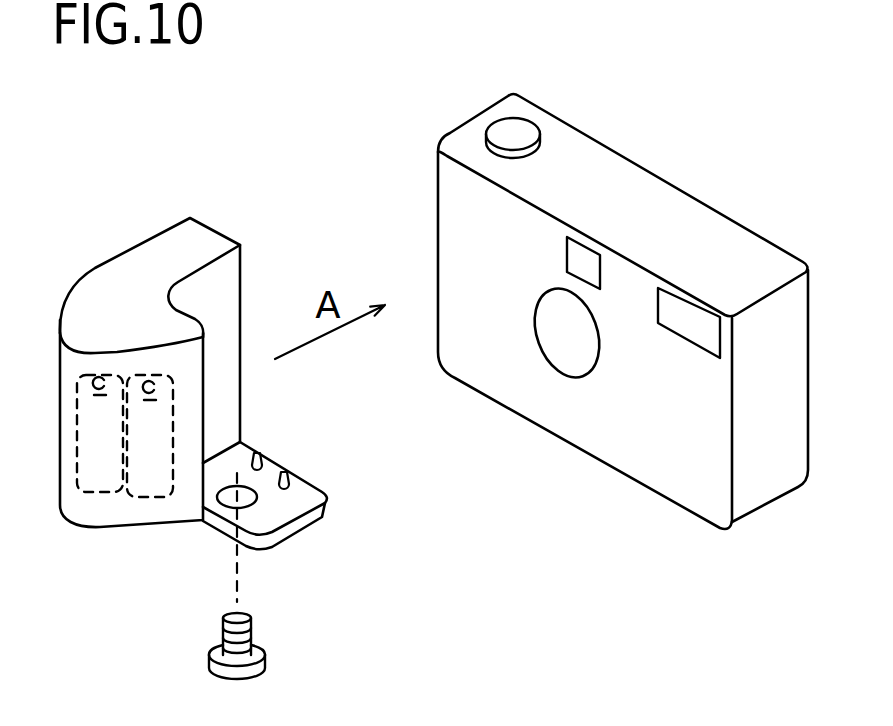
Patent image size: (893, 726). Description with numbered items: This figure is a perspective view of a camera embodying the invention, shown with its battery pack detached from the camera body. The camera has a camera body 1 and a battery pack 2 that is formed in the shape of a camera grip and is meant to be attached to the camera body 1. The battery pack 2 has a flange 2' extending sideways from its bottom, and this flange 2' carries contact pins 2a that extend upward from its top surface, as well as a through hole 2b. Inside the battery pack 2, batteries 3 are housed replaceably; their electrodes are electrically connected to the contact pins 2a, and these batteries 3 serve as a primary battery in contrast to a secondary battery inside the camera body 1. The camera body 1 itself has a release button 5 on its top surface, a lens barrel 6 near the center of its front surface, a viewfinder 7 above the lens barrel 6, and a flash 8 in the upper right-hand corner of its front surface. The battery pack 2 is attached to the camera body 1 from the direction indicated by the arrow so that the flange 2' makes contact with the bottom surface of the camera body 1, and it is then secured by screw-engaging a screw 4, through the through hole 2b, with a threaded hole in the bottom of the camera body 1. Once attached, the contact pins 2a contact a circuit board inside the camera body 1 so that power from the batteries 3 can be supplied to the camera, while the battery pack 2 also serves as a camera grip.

The camera body 1 is at (633, 200).
The battery pack 2 is at (150, 339).
The flange 2' is at (312, 514).
The contact pins 2a is at (284, 470).
The through hole 2b is at (231, 499).
The batteries 3 is at (93, 460).
The screw 4 is at (264, 648).
The release button 5 is at (517, 132).
The lens barrel 6 is at (560, 343).
The viewfinder 7 is at (577, 257).
The flash 8 is at (698, 330).